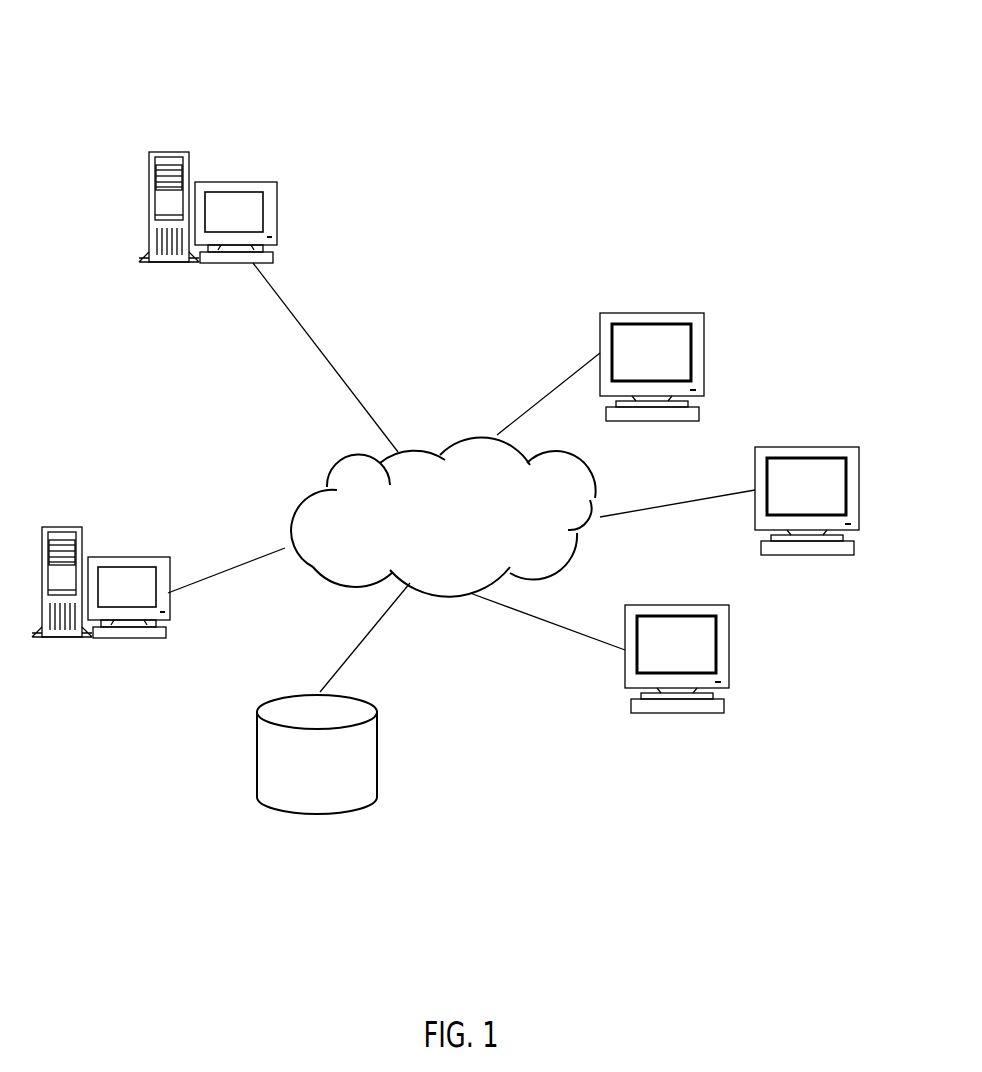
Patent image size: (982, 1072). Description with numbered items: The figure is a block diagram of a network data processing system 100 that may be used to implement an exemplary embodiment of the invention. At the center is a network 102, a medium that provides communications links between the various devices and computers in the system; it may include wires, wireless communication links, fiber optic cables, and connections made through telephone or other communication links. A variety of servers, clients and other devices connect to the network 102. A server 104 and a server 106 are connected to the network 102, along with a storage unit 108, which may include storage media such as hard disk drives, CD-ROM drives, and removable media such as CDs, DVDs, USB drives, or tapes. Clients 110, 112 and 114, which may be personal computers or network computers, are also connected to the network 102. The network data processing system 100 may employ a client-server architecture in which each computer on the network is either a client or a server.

The network data processing system 100 is at (421, 36).
The network 102 is at (465, 527).
The server 104 is at (135, 557).
The server 106 is at (230, 182).
The storage unit 108 is at (377, 757).
The client 110 is at (645, 313).
The client 112 is at (793, 447).
The client 114 is at (730, 652).